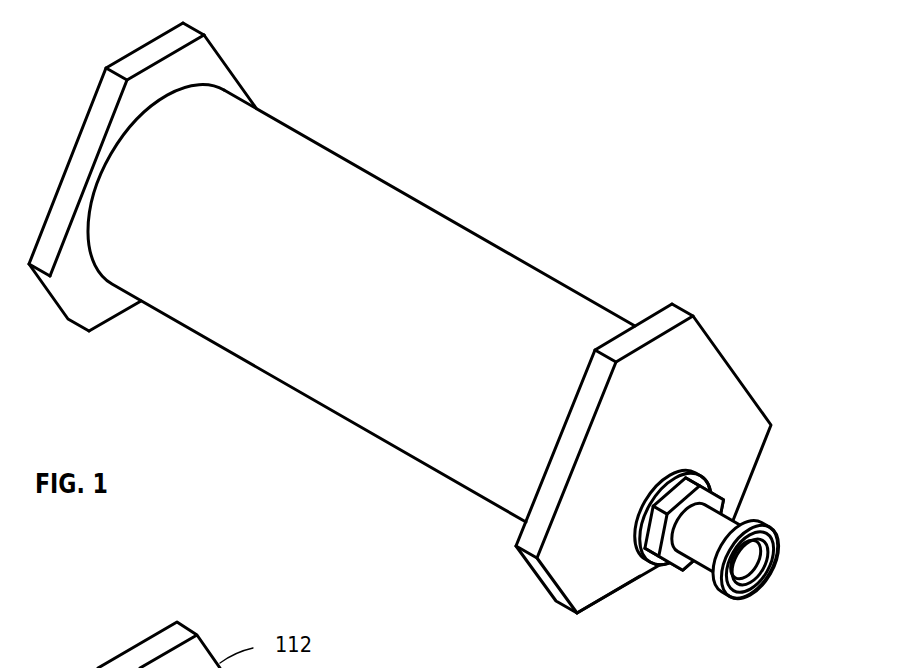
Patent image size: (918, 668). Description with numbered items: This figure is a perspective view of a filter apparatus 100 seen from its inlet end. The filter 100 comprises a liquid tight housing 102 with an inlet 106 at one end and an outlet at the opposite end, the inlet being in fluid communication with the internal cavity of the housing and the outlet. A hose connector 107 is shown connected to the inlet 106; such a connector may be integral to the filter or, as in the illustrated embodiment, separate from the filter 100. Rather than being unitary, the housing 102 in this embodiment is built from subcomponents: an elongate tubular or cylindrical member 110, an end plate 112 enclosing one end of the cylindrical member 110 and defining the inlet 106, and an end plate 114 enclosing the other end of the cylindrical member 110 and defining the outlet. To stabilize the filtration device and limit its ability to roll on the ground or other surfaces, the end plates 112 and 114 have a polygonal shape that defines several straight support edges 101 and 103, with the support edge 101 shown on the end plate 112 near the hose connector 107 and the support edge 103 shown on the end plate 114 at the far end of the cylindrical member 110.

The filter apparatus 100 is at (583, 175).
The straight support edge 101 is at (607, 602).
The housing 102 is at (347, 157).
The straight support edge 103 is at (125, 312).
The inlet 106 is at (640, 530).
The hose connector 107 is at (778, 536).
The cylindrical member 110 is at (395, 203).
The end plate 112 is at (703, 352).
The end plate 114 is at (218, 50).